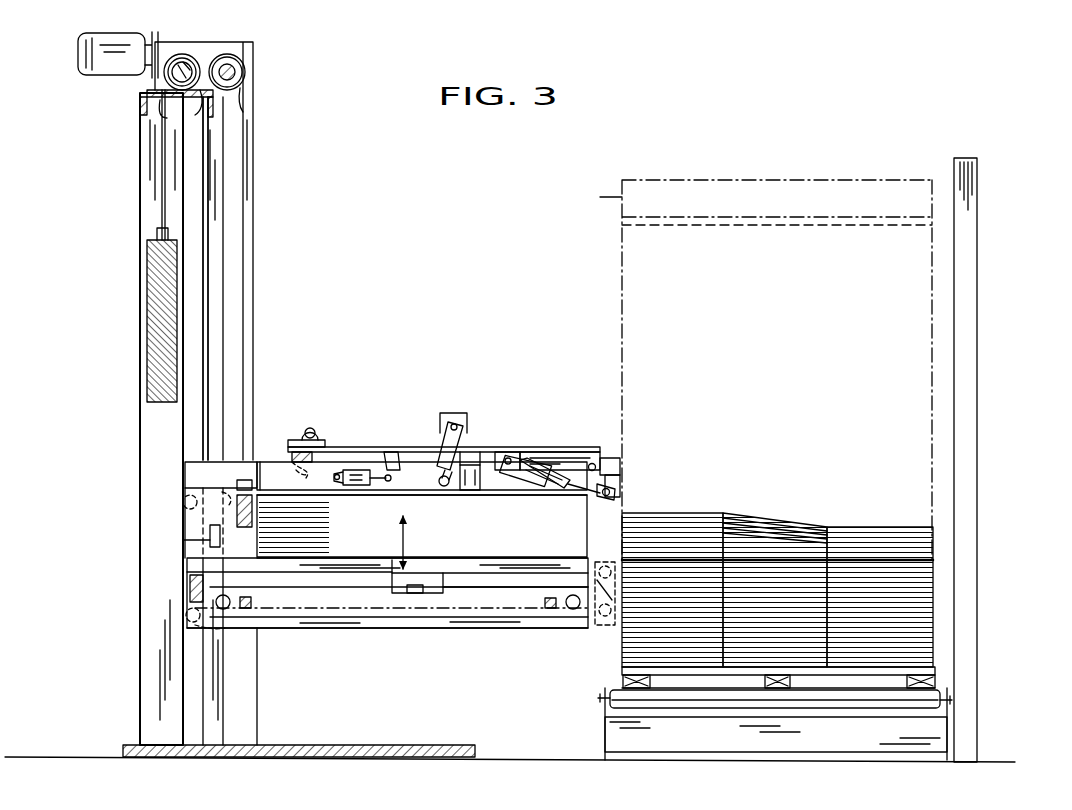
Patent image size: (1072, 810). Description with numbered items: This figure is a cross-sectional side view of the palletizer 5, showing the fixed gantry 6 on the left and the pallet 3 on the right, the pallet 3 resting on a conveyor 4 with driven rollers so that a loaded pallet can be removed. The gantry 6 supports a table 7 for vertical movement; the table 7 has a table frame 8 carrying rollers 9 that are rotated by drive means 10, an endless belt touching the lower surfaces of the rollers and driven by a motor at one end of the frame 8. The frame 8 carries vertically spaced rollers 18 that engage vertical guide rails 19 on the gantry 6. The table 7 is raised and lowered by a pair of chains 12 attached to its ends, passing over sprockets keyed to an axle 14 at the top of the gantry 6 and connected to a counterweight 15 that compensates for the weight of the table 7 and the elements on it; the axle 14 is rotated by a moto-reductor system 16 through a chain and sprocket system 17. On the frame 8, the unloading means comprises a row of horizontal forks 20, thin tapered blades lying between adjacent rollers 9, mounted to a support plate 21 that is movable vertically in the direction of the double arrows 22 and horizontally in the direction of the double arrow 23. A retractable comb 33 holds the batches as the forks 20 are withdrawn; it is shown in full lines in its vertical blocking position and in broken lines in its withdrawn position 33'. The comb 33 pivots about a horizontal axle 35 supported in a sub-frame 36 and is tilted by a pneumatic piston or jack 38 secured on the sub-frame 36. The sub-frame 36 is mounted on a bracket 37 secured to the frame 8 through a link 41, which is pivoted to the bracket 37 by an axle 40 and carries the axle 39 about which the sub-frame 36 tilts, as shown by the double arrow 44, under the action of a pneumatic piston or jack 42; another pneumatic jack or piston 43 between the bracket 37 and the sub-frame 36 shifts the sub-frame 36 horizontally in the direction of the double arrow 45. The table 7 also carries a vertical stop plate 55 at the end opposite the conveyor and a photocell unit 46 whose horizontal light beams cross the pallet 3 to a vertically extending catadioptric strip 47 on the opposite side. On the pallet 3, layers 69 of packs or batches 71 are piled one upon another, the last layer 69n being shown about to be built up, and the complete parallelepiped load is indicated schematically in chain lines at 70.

The pallet 3 is at (937, 680).
The conveyor 4 is at (957, 707).
The palletizer 5 is at (385, 443).
The fixed gantry 6 is at (168, 412).
The table 7 is at (343, 634).
The table frame 8 is at (513, 628).
The rollers 9 is at (283, 567).
The drive means 10 is at (195, 585).
The chains 12 is at (162, 149).
The axle 14 is at (232, 75).
The counterweight 15 is at (160, 268).
The moto-reductor system 16 is at (118, 52).
The chain and sprocket system 17 is at (210, 42).
The rollers 18 is at (205, 530).
The vertical guide rails 19 is at (210, 222).
The forks 20 is at (460, 527).
The support plate 21 is at (403, 585).
The double arrows 22 is at (397, 540).
The double arrow 23 is at (480, 555).
The retractable comb 33 is at (653, 468).
The withdrawn position 33' is at (566, 521).
The horizontal axle 35 is at (596, 466).
The sub-frame 36 is at (537, 450).
The bracket 37 is at (320, 478).
The pneumatic piston or jack 38 is at (543, 460).
The axle 39 is at (316, 432).
The axle 40 is at (290, 465).
The link 41 is at (298, 455).
The pneumatic piston or jack 42 is at (446, 427).
The pneumatic jack or piston 43 is at (355, 481).
The double arrow 44 is at (466, 387).
The double arrow 45 is at (432, 525).
The photocell unit 46 is at (590, 628).
The catadioptric strip 47 is at (967, 485).
The vertical stop plate 55 is at (420, 507).
The layers 69 is at (933, 545).
The last layer 69n is at (600, 197).
The complete load 70 is at (622, 268).
The pack or batch 71 is at (847, 525).